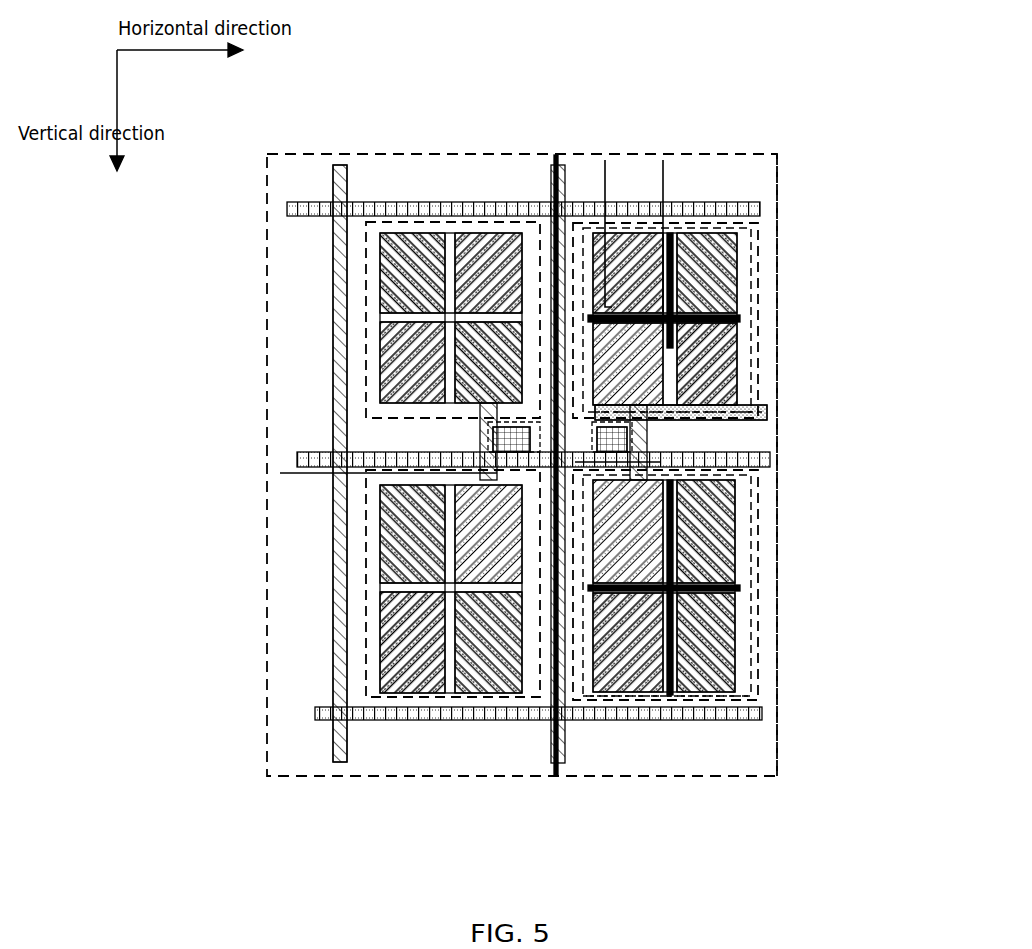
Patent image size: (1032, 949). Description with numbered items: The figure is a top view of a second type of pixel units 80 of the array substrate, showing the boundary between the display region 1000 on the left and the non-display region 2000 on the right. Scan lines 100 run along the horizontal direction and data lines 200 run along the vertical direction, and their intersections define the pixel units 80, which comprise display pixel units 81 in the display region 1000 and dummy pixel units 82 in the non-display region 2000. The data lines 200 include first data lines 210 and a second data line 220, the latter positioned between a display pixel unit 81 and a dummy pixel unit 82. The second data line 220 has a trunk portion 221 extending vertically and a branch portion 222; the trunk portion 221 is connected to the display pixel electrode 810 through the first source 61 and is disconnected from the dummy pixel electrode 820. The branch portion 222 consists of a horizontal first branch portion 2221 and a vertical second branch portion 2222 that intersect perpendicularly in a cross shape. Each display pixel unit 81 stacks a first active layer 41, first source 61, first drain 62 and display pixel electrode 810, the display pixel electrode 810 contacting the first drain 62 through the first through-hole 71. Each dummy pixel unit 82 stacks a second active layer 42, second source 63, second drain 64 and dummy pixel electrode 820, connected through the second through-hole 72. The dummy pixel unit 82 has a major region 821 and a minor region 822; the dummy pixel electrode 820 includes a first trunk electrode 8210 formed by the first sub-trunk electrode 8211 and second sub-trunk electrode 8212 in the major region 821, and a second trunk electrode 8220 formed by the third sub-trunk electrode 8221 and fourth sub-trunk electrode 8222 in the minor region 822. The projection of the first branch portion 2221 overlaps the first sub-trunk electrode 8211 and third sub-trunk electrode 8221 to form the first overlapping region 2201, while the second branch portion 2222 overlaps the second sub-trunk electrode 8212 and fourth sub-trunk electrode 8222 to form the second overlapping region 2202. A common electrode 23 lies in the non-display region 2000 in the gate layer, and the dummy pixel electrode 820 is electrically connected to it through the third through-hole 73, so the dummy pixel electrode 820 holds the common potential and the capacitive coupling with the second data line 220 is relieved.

The display region 1000 is at (265, 155).
The non-display region 2000 is at (779, 155).
The scan line 100 is at (760, 209).
The data line 200 is at (593, 48).
The first data line 210 is at (347, 197).
The second data line 220 is at (633, 78).
The trunk portion 221 is at (556, 158).
The branch portion 222 is at (662, 112).
The first branch portion 2221 is at (605, 160).
The second branch portion 2222 is at (660, 160).
The first overlapping region 2201 is at (742, 305).
The second overlapping region 2202 is at (678, 230).
The first sub-trunk electrode 8211 is at (740, 316).
The first trunk electrode 8210 is at (772, 311).
The second sub-trunk electrode 8212 is at (670, 233).
The third sub-trunk electrode 8221 is at (740, 586).
The second trunk electrode 8220 is at (772, 583).
The fourth sub-trunk electrode 8222 is at (662, 700).
The major region 821 is at (746, 418).
The minor region 822 is at (754, 700).
The display pixel electrode 810 is at (540, 720).
The display pixel unit 81 is at (441, 501).
The dummy pixel electrode 820 is at (573, 695).
The dummy pixel unit 82 is at (626, 501).
The pixel unit 80 is at (517, 518).
The first through-hole 71 is at (490, 393).
The second through-hole 72 is at (668, 385).
The third through-hole 73 is at (665, 402).
The common electrode 23 is at (754, 408).
The first active layer 41 is at (493, 422).
The second active layer 42 is at (640, 433).
The first source 61 is at (490, 440).
The first drain 62 is at (280, 473).
The second source 63 is at (650, 448).
The second drain 64 is at (650, 462).